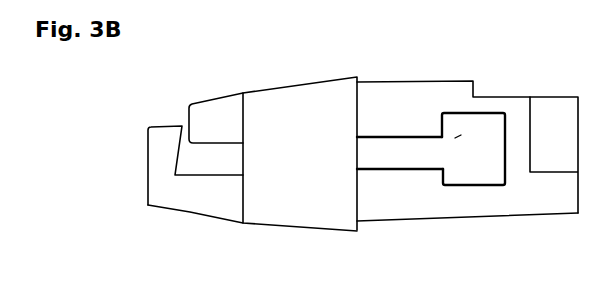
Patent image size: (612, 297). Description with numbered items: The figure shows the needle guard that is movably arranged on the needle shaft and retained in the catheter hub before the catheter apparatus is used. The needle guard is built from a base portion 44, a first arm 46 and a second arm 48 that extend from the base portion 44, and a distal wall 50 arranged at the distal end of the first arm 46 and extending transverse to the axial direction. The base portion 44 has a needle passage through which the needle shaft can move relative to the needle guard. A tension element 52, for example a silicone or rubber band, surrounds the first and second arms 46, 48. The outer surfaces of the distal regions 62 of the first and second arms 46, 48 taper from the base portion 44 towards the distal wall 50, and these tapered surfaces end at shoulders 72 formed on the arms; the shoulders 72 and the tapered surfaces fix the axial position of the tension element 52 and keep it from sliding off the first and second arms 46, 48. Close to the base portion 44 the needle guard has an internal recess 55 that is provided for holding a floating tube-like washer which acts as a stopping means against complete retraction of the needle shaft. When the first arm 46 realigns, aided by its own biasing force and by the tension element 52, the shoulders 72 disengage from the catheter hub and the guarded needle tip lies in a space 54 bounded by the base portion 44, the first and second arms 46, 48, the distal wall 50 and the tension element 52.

The base portion 44 is at (519, 108).
The first arm 46 is at (393, 203).
The second arm 48 is at (413, 87).
The distal wall 50 is at (160, 157).
The tension element 52 is at (290, 107).
The space 54 is at (467, 123).
The internal recess 55 is at (495, 190).
The distal regions 62 is at (208, 203).
The shoulders 72 is at (236, 97).